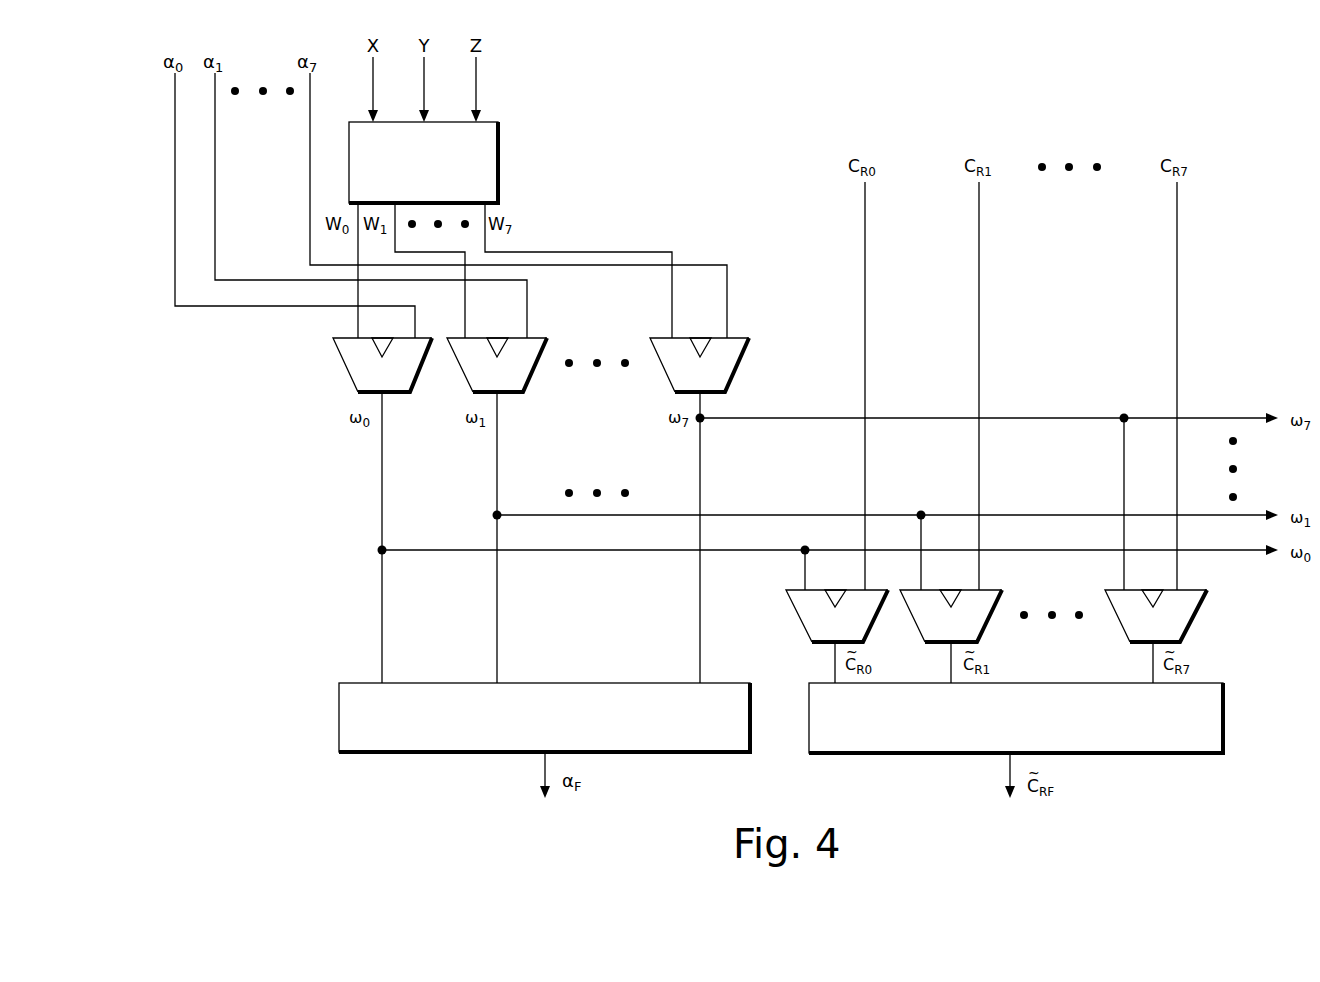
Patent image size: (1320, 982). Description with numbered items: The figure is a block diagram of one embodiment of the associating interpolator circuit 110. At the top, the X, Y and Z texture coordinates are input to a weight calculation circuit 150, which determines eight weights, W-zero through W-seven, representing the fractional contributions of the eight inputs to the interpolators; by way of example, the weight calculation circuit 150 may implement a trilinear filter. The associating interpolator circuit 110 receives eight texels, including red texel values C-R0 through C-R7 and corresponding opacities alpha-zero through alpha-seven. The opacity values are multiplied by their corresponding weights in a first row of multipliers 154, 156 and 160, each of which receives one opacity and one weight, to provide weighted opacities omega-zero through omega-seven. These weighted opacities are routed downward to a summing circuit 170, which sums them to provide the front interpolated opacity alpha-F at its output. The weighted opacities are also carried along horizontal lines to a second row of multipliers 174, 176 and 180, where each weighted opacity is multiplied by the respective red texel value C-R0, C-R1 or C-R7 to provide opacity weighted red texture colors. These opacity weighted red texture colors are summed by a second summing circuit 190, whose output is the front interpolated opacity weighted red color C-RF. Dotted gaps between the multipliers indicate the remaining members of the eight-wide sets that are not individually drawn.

The associating interpolator circuit 110 is at (262, 512).
The weight calculation circuit 150 is at (498, 163).
The multiplier 154 is at (342, 368).
The multiplier 156 is at (537, 372).
The multiplier 160 is at (737, 377).
The summing circuit 170 is at (339, 717).
The multiplier 174 is at (797, 618).
The multiplier 176 is at (987, 589).
The multiplier 180 is at (1110, 598).
The summing circuit 190 is at (1223, 715).